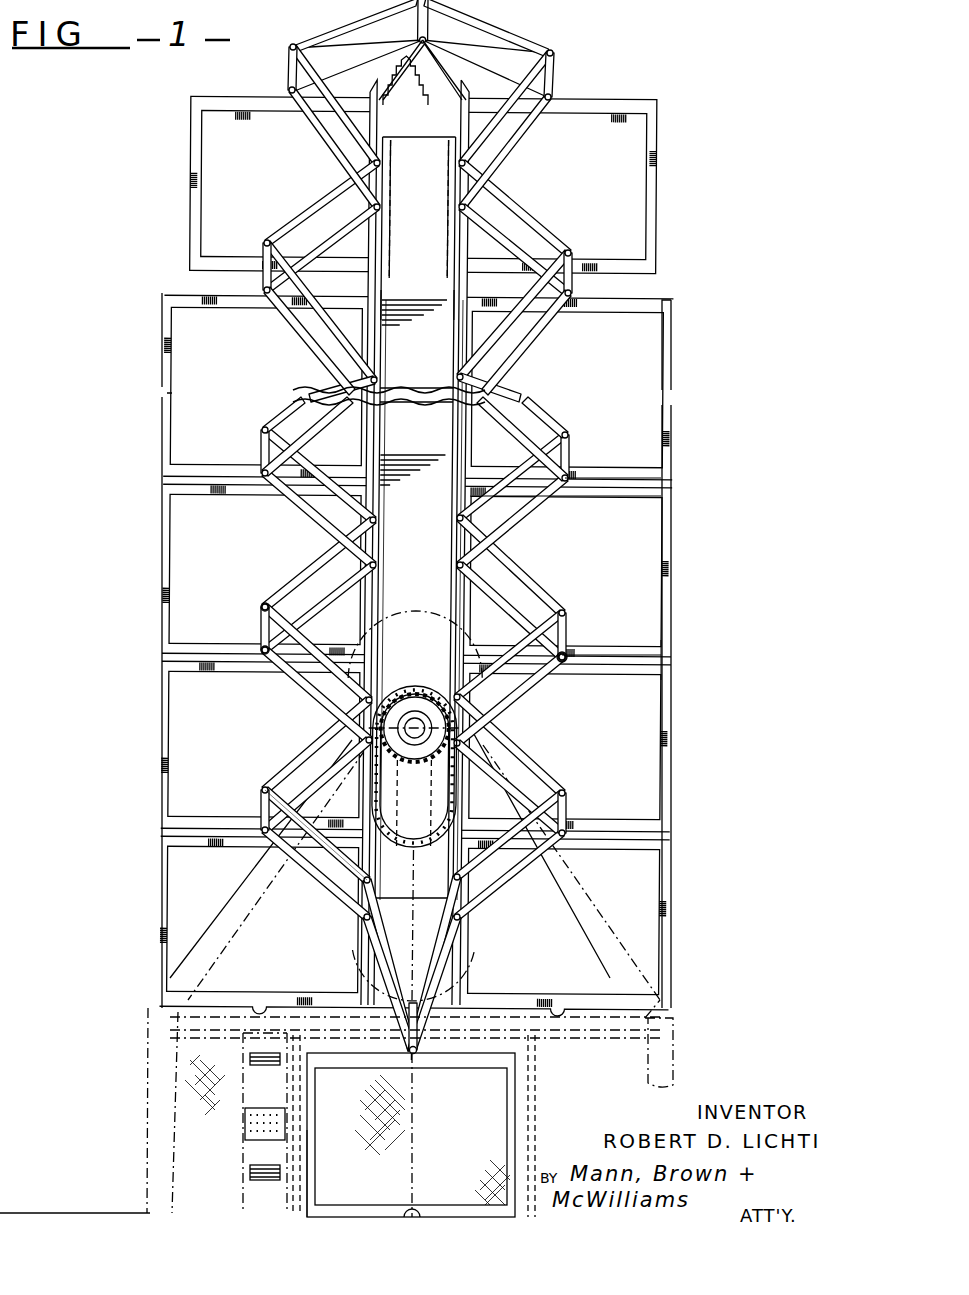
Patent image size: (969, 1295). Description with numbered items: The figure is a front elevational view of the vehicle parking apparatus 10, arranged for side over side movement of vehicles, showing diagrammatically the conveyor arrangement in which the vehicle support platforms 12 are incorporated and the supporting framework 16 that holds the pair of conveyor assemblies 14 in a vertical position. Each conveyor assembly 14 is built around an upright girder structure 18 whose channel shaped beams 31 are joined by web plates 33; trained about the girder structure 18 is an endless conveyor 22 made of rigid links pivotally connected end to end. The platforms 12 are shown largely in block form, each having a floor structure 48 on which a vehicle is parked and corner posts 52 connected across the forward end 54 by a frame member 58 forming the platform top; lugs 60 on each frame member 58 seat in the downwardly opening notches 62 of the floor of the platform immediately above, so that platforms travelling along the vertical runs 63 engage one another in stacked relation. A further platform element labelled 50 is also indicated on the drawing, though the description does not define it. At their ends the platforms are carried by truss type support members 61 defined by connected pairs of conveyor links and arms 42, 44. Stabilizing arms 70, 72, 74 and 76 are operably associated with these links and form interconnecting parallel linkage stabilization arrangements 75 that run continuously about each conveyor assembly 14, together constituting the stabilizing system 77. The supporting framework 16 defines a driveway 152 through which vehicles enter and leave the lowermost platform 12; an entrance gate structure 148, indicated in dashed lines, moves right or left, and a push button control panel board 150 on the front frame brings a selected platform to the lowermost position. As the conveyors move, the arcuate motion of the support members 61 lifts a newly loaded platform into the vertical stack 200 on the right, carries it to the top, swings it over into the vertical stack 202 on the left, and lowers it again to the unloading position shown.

The vehicle parking apparatus 10 is at (148, 922).
The vehicle support platform 12 is at (158, 520).
The conveyor assembly 14 is at (475, 122).
The support framework 16 is at (145, 1078).
The girder structure 18 is at (417, 283).
The endless conveyor 22 is at (458, 78).
The channel shaped beam 31 is at (452, 298).
The web plate 33 is at (437, 288).
The arm 42 is at (512, 144).
The arm 44 is at (448, 62).
The floor structure 48 is at (630, 653).
The panel 50 is at (597, 493).
The corner post 52 is at (463, 605).
The forward end 54 is at (653, 660).
The frame member 58 is at (615, 490).
The lug 60 is at (565, 663).
The truss type support member 61 is at (283, 678).
The notch 62 is at (567, 653).
The vertical run 63 is at (307, 548).
The stabilizing arm 70 is at (263, 622).
The stabilizing arm 72 is at (310, 633).
The stabilizing arm 74 is at (373, 543).
The parallel linkage stabilization arrangement 75 is at (307, 140).
The stabilizing arm 76 is at (280, 777).
The stabilizing system 77 is at (312, 922).
The entrance gate structure 148 is at (520, 1117).
The control panel board 150 is at (238, 1132).
The driveway 152 is at (305, 1195).
The vertical stack 200 is at (661, 360).
The vertical stack 202 is at (160, 350).